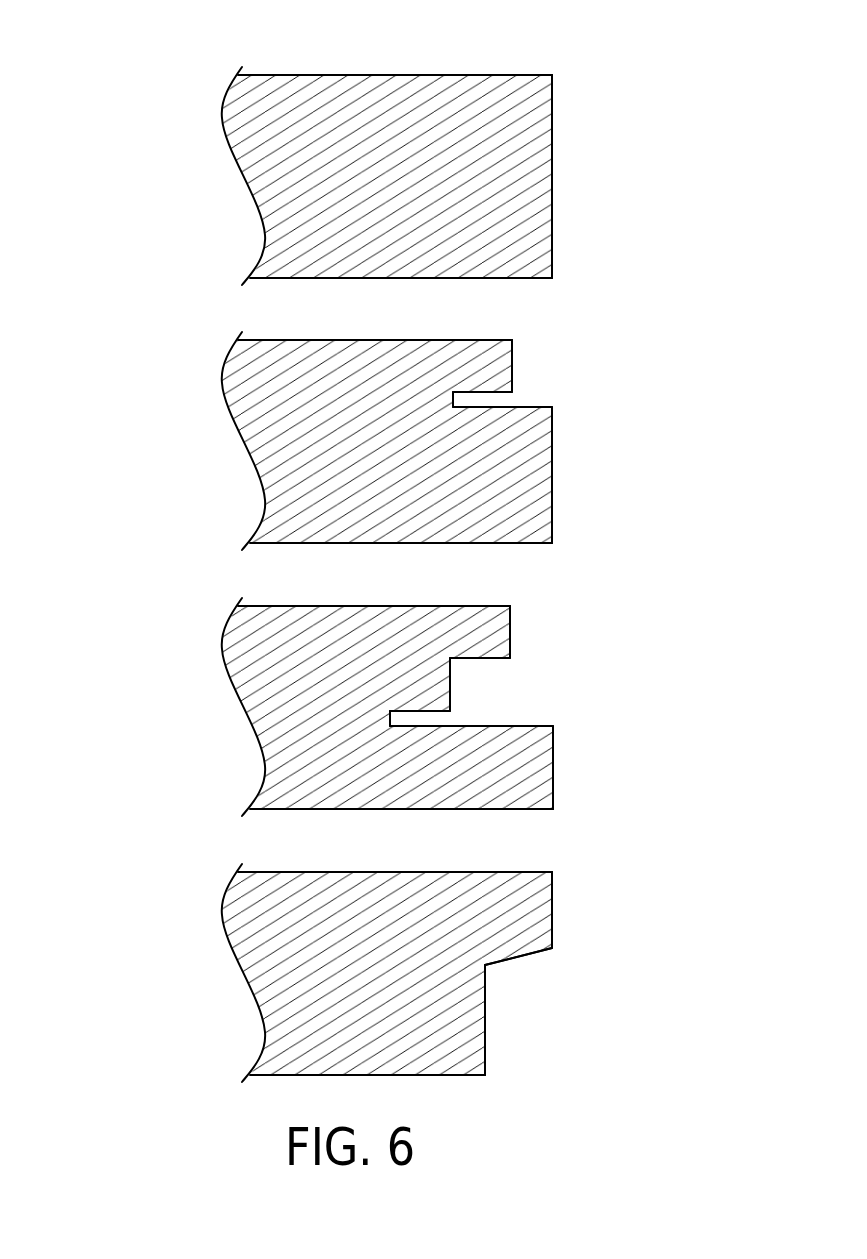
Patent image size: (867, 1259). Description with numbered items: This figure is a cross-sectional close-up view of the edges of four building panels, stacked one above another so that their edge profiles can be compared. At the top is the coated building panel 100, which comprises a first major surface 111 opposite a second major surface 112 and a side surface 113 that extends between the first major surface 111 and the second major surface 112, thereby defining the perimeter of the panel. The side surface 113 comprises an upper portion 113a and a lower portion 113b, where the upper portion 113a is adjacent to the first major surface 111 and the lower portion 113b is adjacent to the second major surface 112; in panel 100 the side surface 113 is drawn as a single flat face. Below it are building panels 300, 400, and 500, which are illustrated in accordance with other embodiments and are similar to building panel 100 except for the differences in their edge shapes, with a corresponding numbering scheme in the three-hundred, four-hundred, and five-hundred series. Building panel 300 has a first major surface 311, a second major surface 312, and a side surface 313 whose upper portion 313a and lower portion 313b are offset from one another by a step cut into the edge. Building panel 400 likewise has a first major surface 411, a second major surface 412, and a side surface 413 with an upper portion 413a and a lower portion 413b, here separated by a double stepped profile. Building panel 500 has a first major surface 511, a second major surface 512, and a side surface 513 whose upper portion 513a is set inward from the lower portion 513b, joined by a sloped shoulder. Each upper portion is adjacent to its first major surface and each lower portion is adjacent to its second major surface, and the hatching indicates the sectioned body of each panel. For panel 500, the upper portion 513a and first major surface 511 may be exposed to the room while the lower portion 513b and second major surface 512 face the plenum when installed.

The coated building panel 100 is at (416, 151).
The first major surface 111 is at (535, 278).
The second major surface 112 is at (465, 75).
The side surface 113 is at (552, 160).
The upper portion of the side surface 113a is at (552, 248).
The lower portion of the side surface 113b is at (552, 101).
The building panel 300 is at (396, 453).
The first major surface 311 is at (535, 543).
The second major surface 312 is at (497, 340).
The side surface 313 is at (502, 441).
The upper portion of the side surface 313a is at (552, 485).
The lower portion of the side surface 313b is at (512, 368).
The building panel 400 is at (395, 714).
The first major surface 411 is at (297, 809).
The second major surface 412 is at (305, 606).
The side surface 413 is at (471, 707).
The upper portion of the side surface 413a is at (553, 788).
The lower portion of the side surface 413b is at (450, 683).
The building panel 500 is at (438, 990).
The first major surface 511 is at (452, 1075).
The second major surface 512 is at (540, 872).
The side surface 513 is at (518, 973).
The upper portion of the side surface 513a is at (485, 1046).
The lower portion of the side surface 513b is at (552, 908).